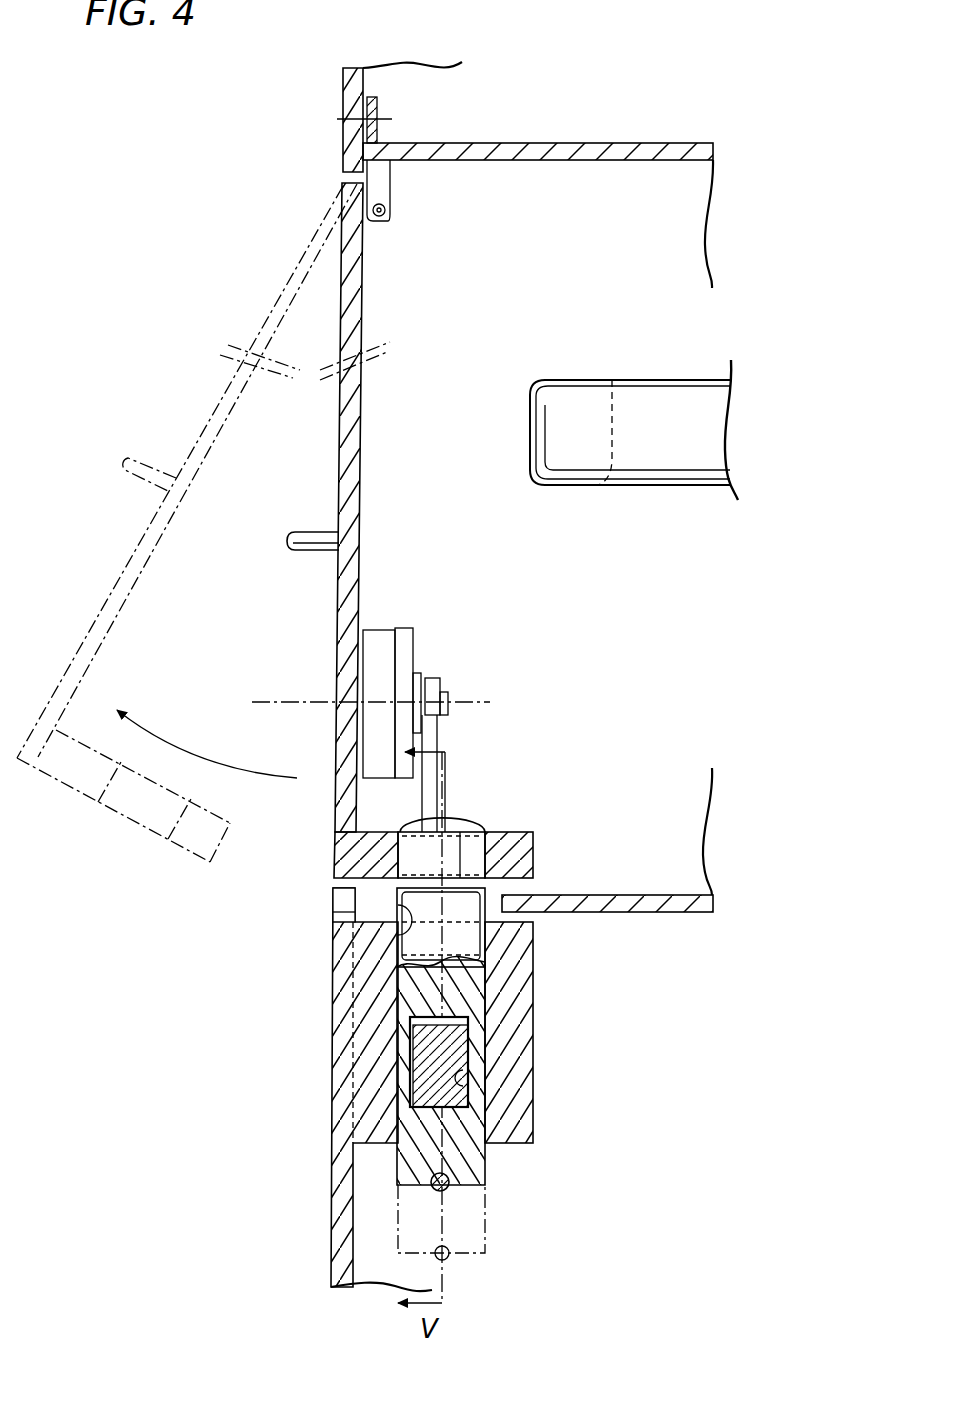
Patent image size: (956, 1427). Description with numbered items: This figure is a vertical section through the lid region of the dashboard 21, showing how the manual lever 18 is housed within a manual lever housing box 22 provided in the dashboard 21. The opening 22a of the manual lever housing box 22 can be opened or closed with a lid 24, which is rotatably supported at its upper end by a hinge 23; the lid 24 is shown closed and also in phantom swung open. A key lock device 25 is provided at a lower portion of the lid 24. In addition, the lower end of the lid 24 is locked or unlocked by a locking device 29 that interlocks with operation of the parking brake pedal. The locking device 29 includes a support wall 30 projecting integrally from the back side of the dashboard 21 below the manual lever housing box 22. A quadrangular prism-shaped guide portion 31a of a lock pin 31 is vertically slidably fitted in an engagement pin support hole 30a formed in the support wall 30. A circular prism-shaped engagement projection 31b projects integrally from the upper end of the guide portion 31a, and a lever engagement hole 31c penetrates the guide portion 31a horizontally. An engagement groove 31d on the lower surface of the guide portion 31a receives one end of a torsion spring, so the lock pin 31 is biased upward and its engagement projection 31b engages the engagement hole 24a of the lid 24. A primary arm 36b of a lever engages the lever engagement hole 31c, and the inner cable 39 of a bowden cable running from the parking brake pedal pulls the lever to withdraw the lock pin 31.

The manual lever 18 is at (641, 378).
The dashboard 21 is at (330, 998).
The manual lever housing box 22 is at (588, 141).
The opening 22a is at (381, 168).
The hinge 23 is at (387, 213).
The lid 24 is at (337, 489).
The engagement hole 24a is at (480, 833).
The key lock device 25 is at (414, 627).
The locking device 29 is at (455, 1027).
The support wall 30 is at (540, 1029).
The engagement pin support hole 30a is at (398, 903).
The lock pin 31 is at (428, 1027).
The guide portion 31a is at (428, 1075).
The engagement projection 31b is at (450, 824).
The lever engagement hole 31c is at (428, 1064).
The engagement groove 31d is at (447, 1190).
The primary arm 36b is at (420, 1073).
The inner cable 39 is at (434, 1190).